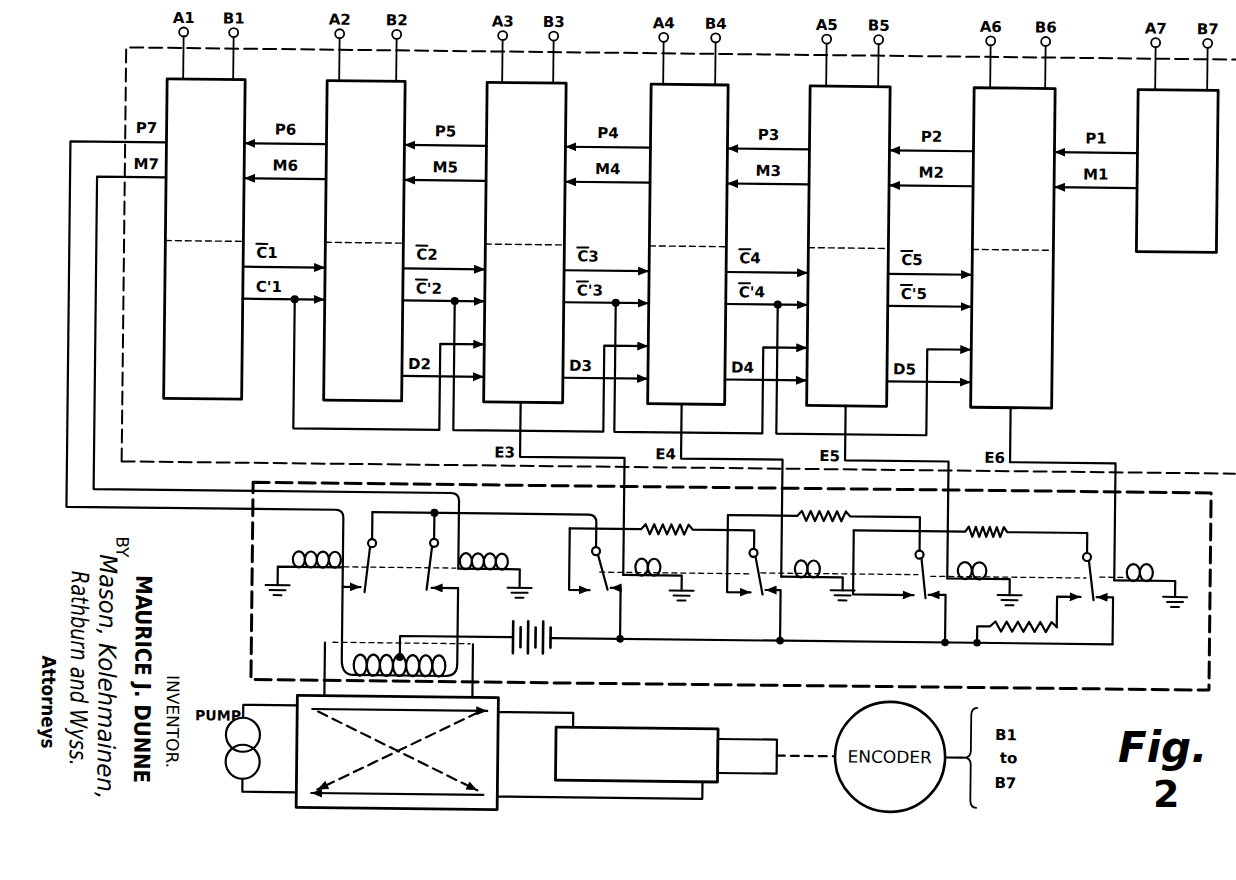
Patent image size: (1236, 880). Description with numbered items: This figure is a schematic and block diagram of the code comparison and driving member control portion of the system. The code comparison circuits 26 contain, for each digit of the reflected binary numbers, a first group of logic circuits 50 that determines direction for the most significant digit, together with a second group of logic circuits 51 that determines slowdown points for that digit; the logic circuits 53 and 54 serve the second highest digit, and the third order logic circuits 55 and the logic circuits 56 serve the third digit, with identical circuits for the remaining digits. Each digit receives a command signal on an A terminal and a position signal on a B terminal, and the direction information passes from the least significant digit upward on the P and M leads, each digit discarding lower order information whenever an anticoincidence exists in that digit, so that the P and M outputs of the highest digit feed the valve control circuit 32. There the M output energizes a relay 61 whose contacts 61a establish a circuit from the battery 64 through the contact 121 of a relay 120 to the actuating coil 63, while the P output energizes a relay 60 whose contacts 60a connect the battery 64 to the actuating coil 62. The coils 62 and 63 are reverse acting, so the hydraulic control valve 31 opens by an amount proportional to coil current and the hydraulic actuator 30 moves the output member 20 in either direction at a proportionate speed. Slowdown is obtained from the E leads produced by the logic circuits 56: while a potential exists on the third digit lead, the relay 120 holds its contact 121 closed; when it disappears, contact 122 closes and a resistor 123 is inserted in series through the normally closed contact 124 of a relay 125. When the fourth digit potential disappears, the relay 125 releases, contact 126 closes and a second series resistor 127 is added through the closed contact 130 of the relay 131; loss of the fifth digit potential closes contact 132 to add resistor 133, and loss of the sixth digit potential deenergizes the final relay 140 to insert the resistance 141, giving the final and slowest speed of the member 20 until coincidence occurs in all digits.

The code comparison circuits 26 is at (127, 100).
The first group of logic circuits 50 is at (246, 104).
The logic circuits 53 is at (406, 101).
The third order logic circuits 55 is at (547, 240).
The second group of logic circuits 51 is at (174, 397).
The logic circuits 54 is at (379, 398).
The logic circuits 56 is at (559, 396).
The valve control circuit 32 is at (258, 517).
The relay 60 is at (334, 546).
The relay 61 is at (507, 548).
The contacts 60a is at (365, 565).
The contacts 61a is at (436, 564).
The actuating coil 62 is at (378, 656).
The actuating coil 63 is at (455, 657).
The battery 64 is at (546, 649).
The relay 120 is at (678, 549).
The contact 121 is at (615, 583).
The contact 122 is at (589, 585).
The resistor 123 is at (656, 517).
The normally closed contact 124 is at (777, 582).
The relay 125 is at (832, 548).
The contact 126 is at (752, 590).
The second series resistor 127 is at (842, 504).
The closed contact 130 is at (936, 583).
The relay 131 is at (1000, 549).
The contact 132 is at (915, 586).
The resistor 133 is at (974, 516).
The final relay 140 is at (1169, 547).
The resistance 141 is at (1037, 624).
The hydraulic control valve 31 is at (508, 759).
The hydraulic actuator 30 is at (619, 721).
The output member 20 is at (743, 766).